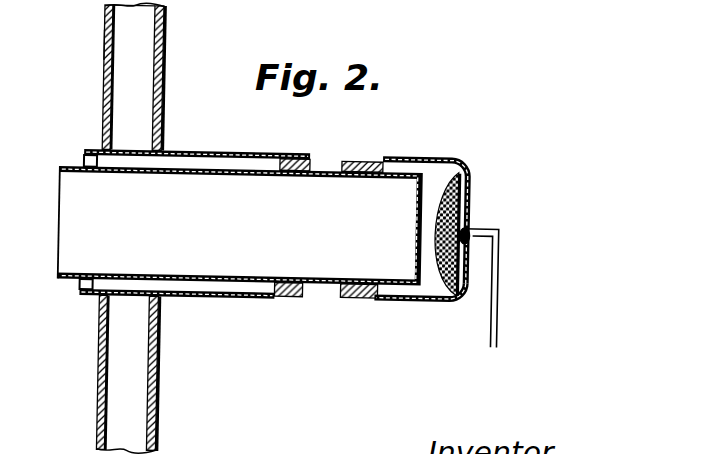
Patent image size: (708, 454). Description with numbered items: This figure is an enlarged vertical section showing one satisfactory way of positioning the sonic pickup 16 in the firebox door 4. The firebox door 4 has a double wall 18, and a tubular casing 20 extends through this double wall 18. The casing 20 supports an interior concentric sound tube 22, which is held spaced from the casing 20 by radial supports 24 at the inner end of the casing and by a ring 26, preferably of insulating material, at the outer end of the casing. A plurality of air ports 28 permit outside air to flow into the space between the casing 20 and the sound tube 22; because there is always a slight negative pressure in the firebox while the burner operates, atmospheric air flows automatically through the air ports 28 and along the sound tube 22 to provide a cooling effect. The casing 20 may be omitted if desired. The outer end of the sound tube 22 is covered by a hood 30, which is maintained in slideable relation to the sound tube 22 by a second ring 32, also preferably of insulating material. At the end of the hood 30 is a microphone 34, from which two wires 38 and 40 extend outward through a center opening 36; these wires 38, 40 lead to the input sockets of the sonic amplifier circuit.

The firebox door 4 is at (104, 44).
The sonic pickup 16 is at (410, 158).
The double wall 18 is at (165, 110).
The tubular casing 20 is at (212, 152).
The sound tube 22 is at (60, 257).
The radial supports 24 is at (84, 161).
The ring 26 is at (310, 163).
The air ports 28 is at (243, 298).
The hood 30 is at (398, 298).
The ring 32 is at (339, 297).
The microphone 34 is at (458, 170).
The center opening 36 is at (464, 228).
The wire 38 is at (492, 312).
The wire 40 is at (499, 302).